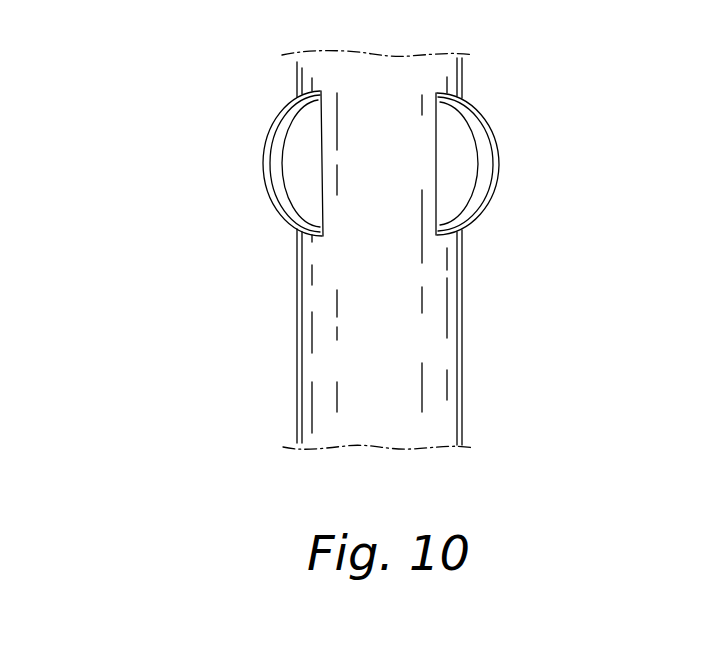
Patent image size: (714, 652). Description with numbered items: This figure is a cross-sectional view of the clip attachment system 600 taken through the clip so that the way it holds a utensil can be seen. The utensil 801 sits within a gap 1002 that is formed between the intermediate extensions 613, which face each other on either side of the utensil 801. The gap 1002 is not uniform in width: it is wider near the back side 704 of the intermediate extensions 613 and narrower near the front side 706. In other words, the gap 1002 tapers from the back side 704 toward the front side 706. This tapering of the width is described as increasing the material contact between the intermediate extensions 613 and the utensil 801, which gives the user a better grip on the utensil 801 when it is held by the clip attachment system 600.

The clip attachment system 600 is at (167, 170).
The intermediate extensions 613 is at (455, 165).
The back side 704 is at (443, 239).
The front side 706 is at (447, 88).
The utensil 801 is at (442, 382).
The gap 1002 is at (360, 244).